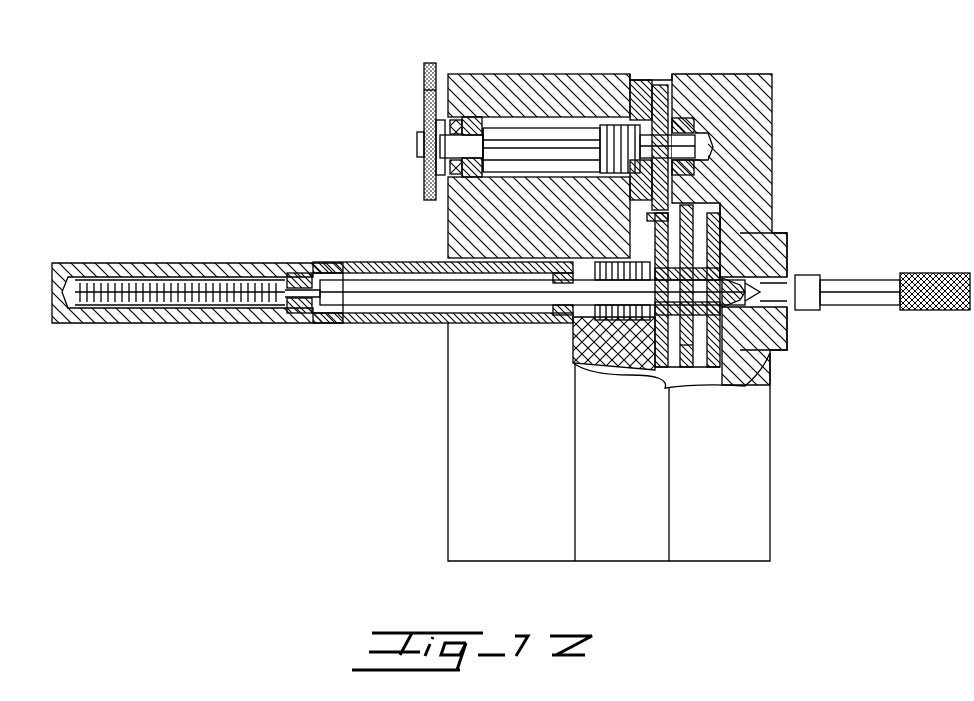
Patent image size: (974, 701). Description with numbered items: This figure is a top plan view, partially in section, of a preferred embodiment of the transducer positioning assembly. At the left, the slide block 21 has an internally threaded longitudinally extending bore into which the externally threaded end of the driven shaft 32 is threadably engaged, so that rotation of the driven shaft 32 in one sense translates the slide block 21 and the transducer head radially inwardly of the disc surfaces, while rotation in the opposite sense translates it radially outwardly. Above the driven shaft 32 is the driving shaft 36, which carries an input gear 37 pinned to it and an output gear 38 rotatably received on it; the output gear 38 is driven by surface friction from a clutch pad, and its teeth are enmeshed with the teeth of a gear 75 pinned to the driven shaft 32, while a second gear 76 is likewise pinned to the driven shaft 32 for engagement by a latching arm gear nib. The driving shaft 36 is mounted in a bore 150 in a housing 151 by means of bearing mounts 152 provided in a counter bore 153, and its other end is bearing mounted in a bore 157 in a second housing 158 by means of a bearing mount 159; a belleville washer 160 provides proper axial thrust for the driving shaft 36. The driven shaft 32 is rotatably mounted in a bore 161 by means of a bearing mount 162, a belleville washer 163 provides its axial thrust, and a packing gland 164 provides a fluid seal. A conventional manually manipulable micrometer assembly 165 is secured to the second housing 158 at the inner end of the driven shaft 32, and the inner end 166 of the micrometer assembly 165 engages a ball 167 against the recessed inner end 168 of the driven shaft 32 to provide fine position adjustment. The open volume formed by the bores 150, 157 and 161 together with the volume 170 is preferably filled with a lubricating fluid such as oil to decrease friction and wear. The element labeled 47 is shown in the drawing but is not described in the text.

The slide block 21 is at (90, 265).
The driven shaft 32 is at (330, 285).
The driving shaft 36 is at (530, 143).
The input gear 37 is at (430, 140).
The output gear 38 is at (660, 86).
The bearing block 47 is at (638, 90).
The gear 75 is at (658, 388).
The gear 76 is at (720, 215).
The bore 150 is at (500, 128).
The housing 151 is at (522, 92).
The bearing mounts 152 is at (470, 117).
The counter bore 153 is at (470, 170).
The bore 157 is at (685, 123).
The second housing 158 is at (755, 80).
The bearing mount 159 is at (680, 165).
The belleville washer 160 is at (602, 128).
The bore 161 is at (590, 343).
The bearing mount 162 is at (600, 378).
The belleville washer 163 is at (600, 370).
The packing gland 164 is at (600, 325).
The micrometer assembly 165 is at (808, 272).
The inner end 166 is at (770, 295).
The ball 167 is at (745, 300).
The recessed inner end 168 is at (770, 232).
The volume 170 is at (688, 350).